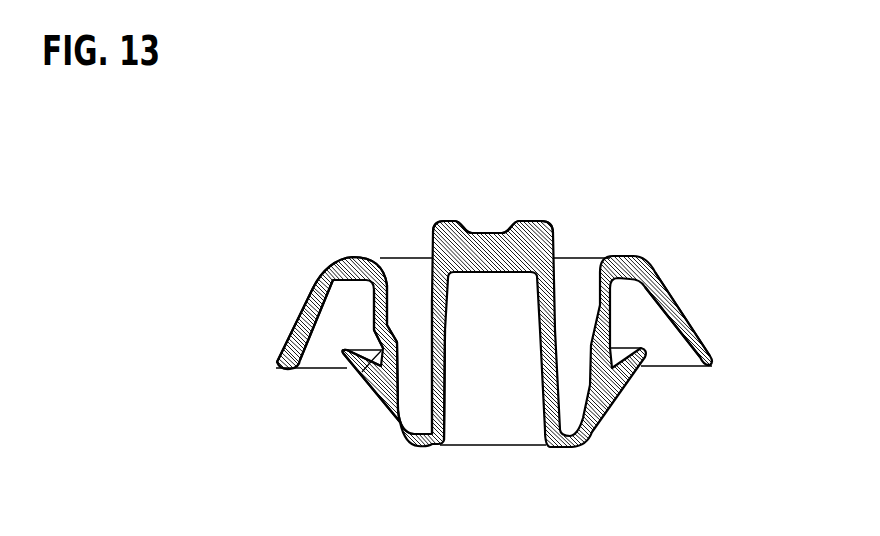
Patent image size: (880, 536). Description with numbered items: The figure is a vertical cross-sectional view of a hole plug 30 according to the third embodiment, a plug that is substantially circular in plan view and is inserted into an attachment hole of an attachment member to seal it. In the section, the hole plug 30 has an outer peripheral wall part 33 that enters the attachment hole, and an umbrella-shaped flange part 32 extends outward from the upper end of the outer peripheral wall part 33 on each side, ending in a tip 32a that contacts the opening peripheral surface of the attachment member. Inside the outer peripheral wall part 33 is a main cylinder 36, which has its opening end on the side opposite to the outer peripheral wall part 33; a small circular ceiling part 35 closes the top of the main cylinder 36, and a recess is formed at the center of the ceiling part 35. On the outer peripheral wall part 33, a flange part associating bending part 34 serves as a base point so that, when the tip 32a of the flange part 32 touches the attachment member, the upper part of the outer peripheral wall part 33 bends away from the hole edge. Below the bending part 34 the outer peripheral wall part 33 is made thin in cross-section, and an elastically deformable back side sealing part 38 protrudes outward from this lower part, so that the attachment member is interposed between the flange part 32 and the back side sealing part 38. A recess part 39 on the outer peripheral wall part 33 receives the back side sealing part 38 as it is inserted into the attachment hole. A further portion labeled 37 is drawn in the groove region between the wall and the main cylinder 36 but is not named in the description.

The hole plug 30 is at (518, 42).
The flange part 32 is at (291, 338).
The tip of the flange part 32a is at (713, 363).
The outer peripheral wall part 33 is at (375, 305).
The flange part associating bending part 34 is at (400, 322).
The ceiling part 35 is at (510, 230).
The main cylinder 36 is at (445, 388).
The groove 37 is at (403, 410).
The back side sealing part 38 is at (345, 353).
The recess part 39 is at (361, 385).